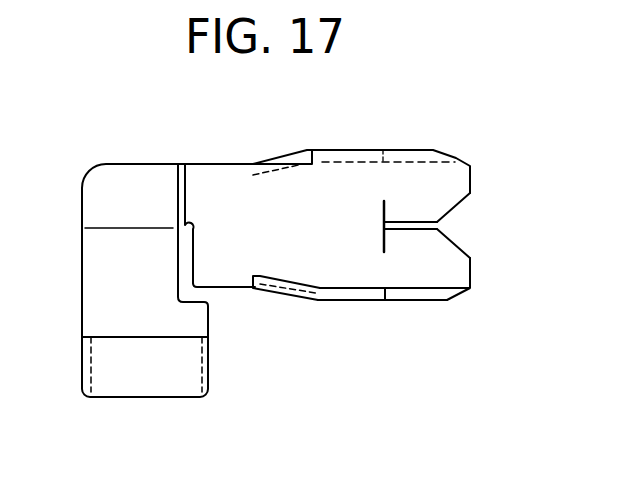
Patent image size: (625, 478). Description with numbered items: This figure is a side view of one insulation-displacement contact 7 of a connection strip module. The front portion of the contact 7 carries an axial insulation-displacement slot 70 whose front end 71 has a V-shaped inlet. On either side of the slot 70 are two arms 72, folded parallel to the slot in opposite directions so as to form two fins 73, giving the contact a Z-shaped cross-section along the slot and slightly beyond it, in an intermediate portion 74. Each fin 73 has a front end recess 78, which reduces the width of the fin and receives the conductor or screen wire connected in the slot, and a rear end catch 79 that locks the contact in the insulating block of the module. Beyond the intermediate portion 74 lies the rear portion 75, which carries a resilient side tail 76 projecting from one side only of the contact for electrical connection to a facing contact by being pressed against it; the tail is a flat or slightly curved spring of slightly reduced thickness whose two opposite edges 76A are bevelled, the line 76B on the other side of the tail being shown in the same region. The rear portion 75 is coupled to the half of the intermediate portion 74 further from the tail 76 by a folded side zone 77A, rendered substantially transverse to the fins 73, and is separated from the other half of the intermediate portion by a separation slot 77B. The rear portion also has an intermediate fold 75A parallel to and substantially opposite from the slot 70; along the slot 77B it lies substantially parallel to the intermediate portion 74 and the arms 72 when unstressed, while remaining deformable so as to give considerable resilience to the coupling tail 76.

The contact 7 is at (88, 152).
The insulation-displacement slot 70 is at (430, 224).
The front end of slot 71 is at (470, 258).
The arms 72 is at (447, 173).
The fins 73 is at (350, 297).
The intermediate portion 74 is at (327, 260).
The rear portion 75 is at (143, 180).
The intermediate fold 75A is at (110, 227).
The resilient side tail 76 is at (133, 373).
The edges of side tail 76A is at (90, 373).
The base fold line 76B is at (203, 373).
The side zone 77A is at (187, 184).
The separation slot 77B is at (183, 273).
The front end recess 78 is at (402, 297).
The rear end catch 79 is at (305, 163).